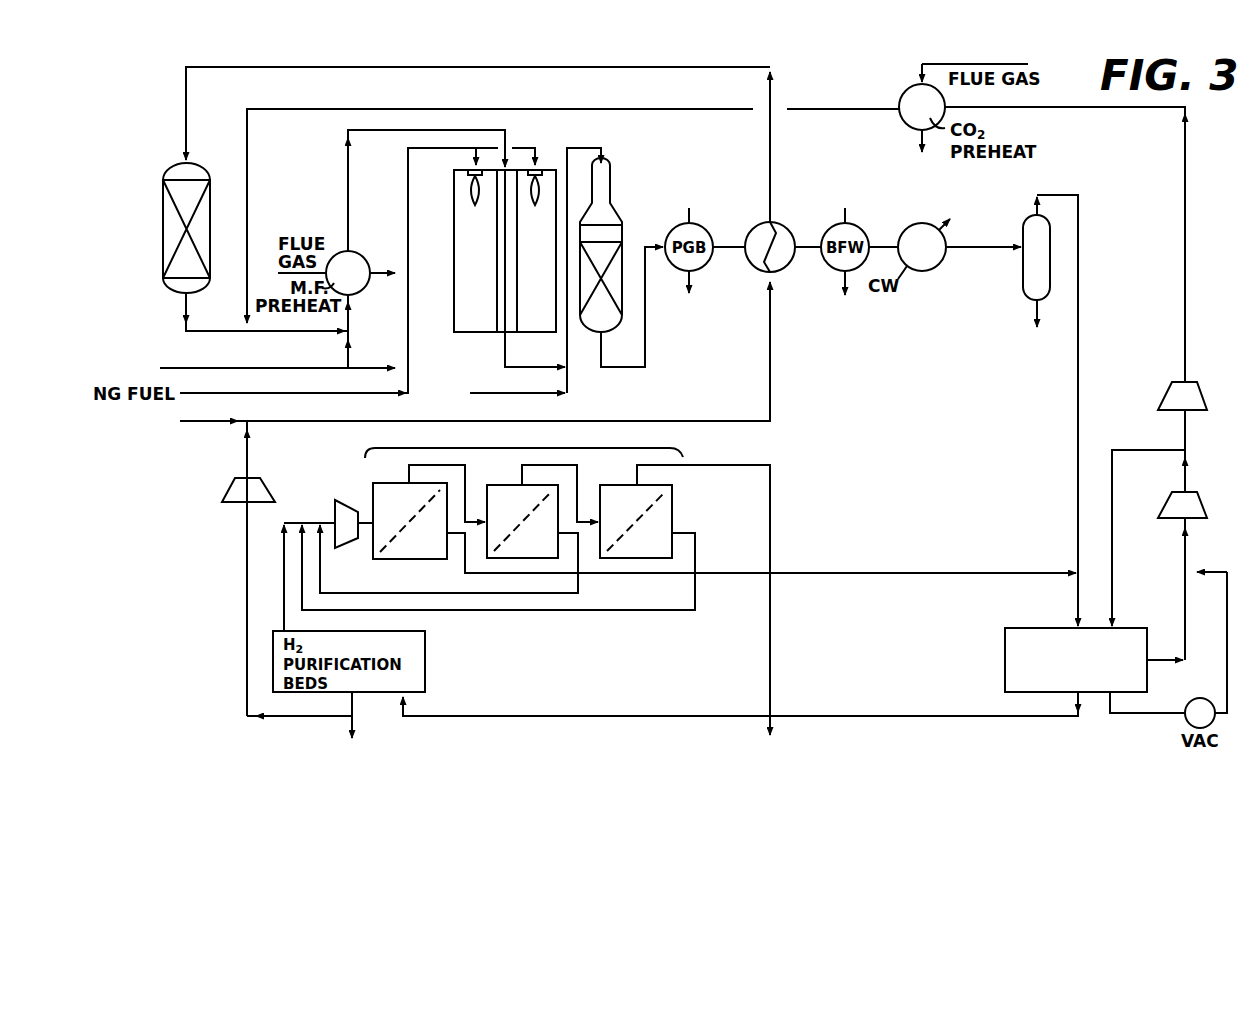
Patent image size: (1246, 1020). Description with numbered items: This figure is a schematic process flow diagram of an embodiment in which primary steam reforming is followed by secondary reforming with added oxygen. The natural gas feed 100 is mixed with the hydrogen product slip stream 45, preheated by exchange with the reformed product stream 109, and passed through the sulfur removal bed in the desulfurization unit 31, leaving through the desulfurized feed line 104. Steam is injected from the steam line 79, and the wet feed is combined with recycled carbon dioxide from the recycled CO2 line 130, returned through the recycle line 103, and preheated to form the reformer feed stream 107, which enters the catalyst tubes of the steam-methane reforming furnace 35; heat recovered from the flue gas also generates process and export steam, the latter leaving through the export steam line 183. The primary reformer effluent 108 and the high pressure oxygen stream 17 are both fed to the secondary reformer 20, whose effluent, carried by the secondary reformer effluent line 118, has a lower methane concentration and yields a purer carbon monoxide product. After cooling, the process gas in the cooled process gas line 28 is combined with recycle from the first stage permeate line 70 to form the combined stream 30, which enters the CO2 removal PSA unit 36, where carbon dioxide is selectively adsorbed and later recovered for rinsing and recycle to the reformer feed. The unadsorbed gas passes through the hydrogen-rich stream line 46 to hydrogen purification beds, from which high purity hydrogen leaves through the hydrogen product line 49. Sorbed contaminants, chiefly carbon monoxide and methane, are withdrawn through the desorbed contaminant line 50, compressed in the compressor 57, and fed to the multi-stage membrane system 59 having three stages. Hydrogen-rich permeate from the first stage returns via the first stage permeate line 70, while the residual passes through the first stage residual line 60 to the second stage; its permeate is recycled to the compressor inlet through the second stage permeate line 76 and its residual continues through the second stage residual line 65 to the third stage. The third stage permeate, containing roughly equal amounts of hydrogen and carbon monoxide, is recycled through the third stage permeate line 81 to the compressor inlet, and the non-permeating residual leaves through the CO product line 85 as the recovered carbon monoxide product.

The high pressure oxygen stream 17 is at (567, 376).
The secondary reformer 20 is at (612, 188).
The cooled process gas line 28 is at (1078, 293).
The combined stream 30 is at (1077, 594).
The desulfurization unit 31 is at (163, 240).
The steam-methane reforming furnace 35 is at (453, 244).
The CO2 removal PSA unit 36 is at (1005, 656).
The hydrogen product slip stream 45 is at (247, 583).
The hydrogen-rich stream line 46 is at (893, 713).
The hydrogen product line 49 is at (352, 723).
The desorbed contaminant line 50 is at (283, 558).
The compressor 57 is at (335, 505).
The multi-stage membrane system 59 is at (524, 493).
The first stage residual line 60 is at (466, 481).
The second stage residual line 65 is at (578, 481).
The first stage permeate line 70 is at (465, 561).
The second stage permeate line 76 is at (579, 590).
The steam line 79 is at (297, 366).
The third stage permeate line 81 is at (688, 530).
The CO product line 85 is at (771, 681).
The natural gas feed 100 is at (196, 411).
The recycle gas line 103 is at (771, 170).
The pretreated feed line 104 is at (197, 331).
The preheated reformer feed stream 107 is at (348, 178).
The primary reformer effluent 108 is at (533, 366).
The reformed product stream 109 is at (741, 250).
The shift effluent line 118 is at (619, 370).
The recycled CO2 line 130 is at (1185, 288).
The export steam line 183 is at (366, 366).